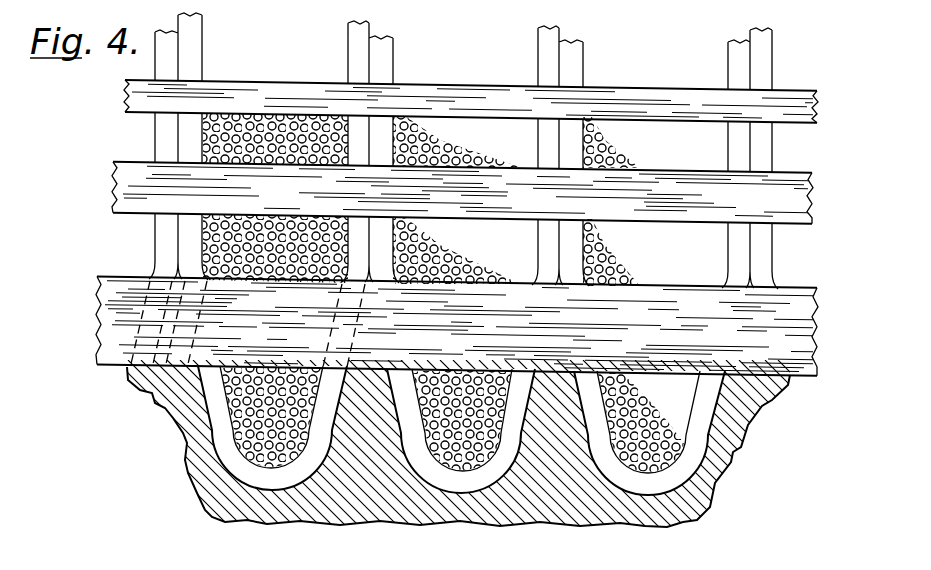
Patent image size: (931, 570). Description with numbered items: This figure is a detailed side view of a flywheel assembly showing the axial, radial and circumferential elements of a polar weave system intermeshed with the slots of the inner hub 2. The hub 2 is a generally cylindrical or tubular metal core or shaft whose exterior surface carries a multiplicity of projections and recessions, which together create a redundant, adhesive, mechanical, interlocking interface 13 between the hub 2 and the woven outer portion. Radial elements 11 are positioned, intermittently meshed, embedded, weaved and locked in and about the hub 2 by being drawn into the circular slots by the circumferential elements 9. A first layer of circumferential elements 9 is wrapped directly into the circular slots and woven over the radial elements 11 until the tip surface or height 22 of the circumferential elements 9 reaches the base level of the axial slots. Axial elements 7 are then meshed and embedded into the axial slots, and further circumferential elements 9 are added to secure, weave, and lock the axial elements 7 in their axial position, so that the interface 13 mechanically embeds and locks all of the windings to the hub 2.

The hub 2 is at (690, 508).
The axial elements 7 is at (138, 107).
The circumferential elements 9 is at (297, 145).
The radial elements 11 is at (167, 52).
The interface 13 is at (851, 172).
The tip surface or height 22 is at (640, 375).